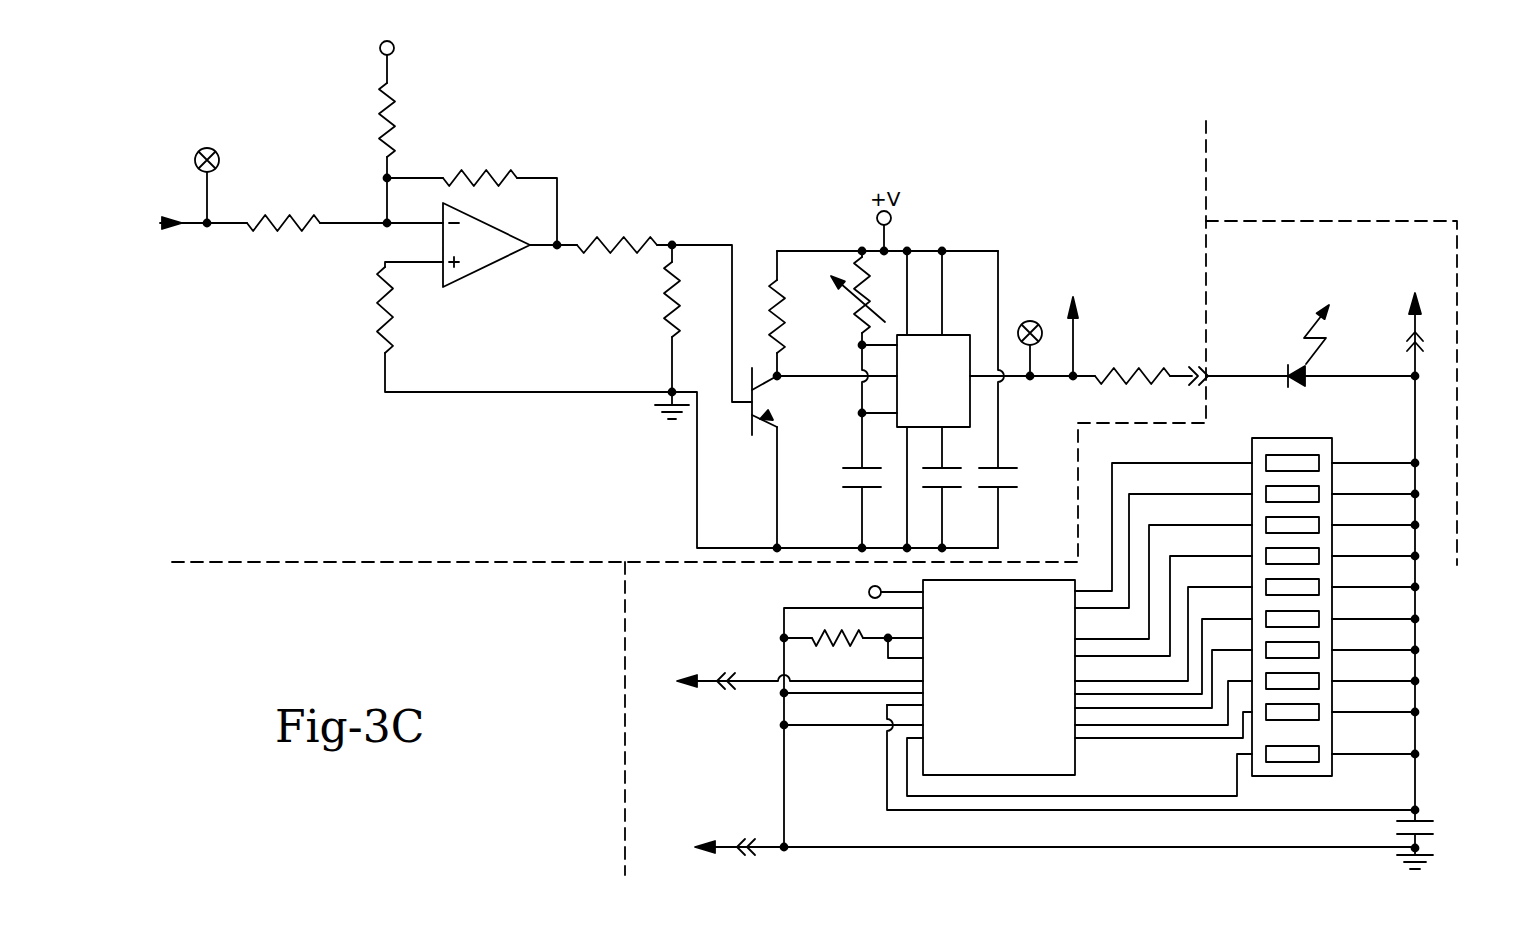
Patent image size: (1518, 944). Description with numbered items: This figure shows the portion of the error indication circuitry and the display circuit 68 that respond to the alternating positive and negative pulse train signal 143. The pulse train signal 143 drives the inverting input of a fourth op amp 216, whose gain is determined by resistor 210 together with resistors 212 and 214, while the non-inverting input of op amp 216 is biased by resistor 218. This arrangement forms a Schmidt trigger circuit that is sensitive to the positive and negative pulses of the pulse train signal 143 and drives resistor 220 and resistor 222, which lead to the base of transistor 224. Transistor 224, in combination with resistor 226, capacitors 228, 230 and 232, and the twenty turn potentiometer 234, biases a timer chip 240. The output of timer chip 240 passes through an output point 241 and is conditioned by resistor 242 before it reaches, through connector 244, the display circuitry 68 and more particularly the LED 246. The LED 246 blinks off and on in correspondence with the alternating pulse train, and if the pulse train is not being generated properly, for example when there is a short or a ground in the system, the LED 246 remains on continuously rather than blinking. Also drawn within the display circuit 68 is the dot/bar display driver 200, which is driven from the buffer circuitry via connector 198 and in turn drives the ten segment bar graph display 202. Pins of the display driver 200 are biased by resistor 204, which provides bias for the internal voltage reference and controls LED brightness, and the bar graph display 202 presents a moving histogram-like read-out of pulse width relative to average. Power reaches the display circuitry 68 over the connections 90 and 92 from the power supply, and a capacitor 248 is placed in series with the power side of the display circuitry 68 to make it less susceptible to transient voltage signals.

The pulse train signal 143 is at (181, 188).
The resistor 210 is at (316, 226).
The resistor 212 is at (384, 97).
The resistor 214 is at (462, 170).
The fourth op amp 216 is at (482, 250).
The resistor 218 is at (392, 300).
The resistor 220 is at (588, 240).
The resistor 222 is at (668, 315).
The transistor 224 is at (769, 414).
The resistor 226 is at (784, 350).
The capacitor 228 is at (857, 474).
The capacitor 230 is at (950, 488).
The capacitor 232 is at (1008, 466).
The potentiometer 234 is at (840, 322).
The timer chip 240 is at (933, 381).
The output terminal 241 is at (1072, 362).
The resistor 242 is at (1112, 364).
The connector 244 is at (1195, 366).
The LED 246 is at (1288, 372).
The display circuit 68 is at (1349, 252).
The connection 90 is at (1418, 320).
The ten segment bar graph display 202 is at (1275, 436).
The dot/bar display driver 200 is at (999, 677).
The resistor 204 is at (822, 641).
The connector 198 is at (795, 665).
The connection 92 is at (1050, 834).
The capacitor 248 is at (1470, 846).